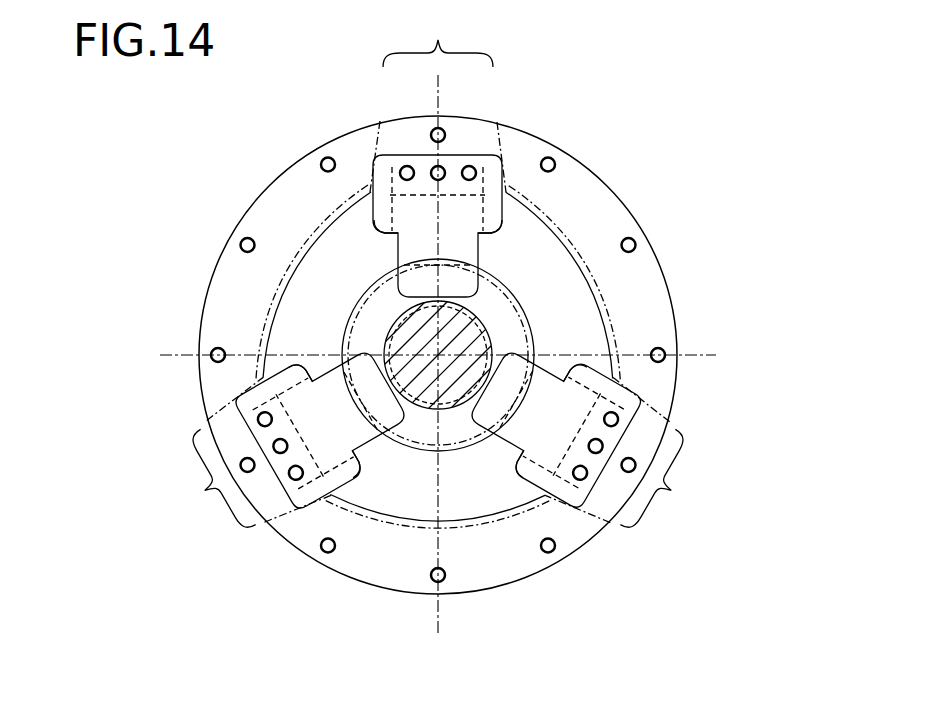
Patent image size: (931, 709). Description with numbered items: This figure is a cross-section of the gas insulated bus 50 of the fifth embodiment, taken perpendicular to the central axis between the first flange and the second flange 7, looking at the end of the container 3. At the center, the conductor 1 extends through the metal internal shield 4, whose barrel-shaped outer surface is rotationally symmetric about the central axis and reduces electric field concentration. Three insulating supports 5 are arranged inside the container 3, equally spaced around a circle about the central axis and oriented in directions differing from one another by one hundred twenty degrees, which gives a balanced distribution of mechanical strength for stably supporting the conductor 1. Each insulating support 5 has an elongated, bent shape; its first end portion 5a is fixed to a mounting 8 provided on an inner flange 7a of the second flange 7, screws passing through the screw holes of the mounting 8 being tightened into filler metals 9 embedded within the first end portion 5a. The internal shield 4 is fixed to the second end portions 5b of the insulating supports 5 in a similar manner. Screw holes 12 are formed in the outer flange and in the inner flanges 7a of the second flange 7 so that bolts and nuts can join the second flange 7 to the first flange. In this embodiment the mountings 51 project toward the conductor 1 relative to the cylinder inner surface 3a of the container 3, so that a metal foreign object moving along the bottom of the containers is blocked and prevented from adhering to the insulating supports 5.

The conductor 1 is at (424, 388).
The container 3 is at (307, 245).
The cylinder inner surface 3a is at (290, 314).
The internal shield 4 is at (457, 427).
The insulating support 5 is at (470, 247).
The first end portion 5a is at (485, 190).
The second end portion 5b is at (479, 292).
The second flange 7 is at (217, 268).
The inner flange 7a is at (433, 276).
The mounting 8 is at (500, 194).
The filler metal 9 is at (405, 165).
The screw hole 12 is at (328, 160).
The gas insulated bus 50 is at (575, 78).
The mounting 51 is at (523, 470).